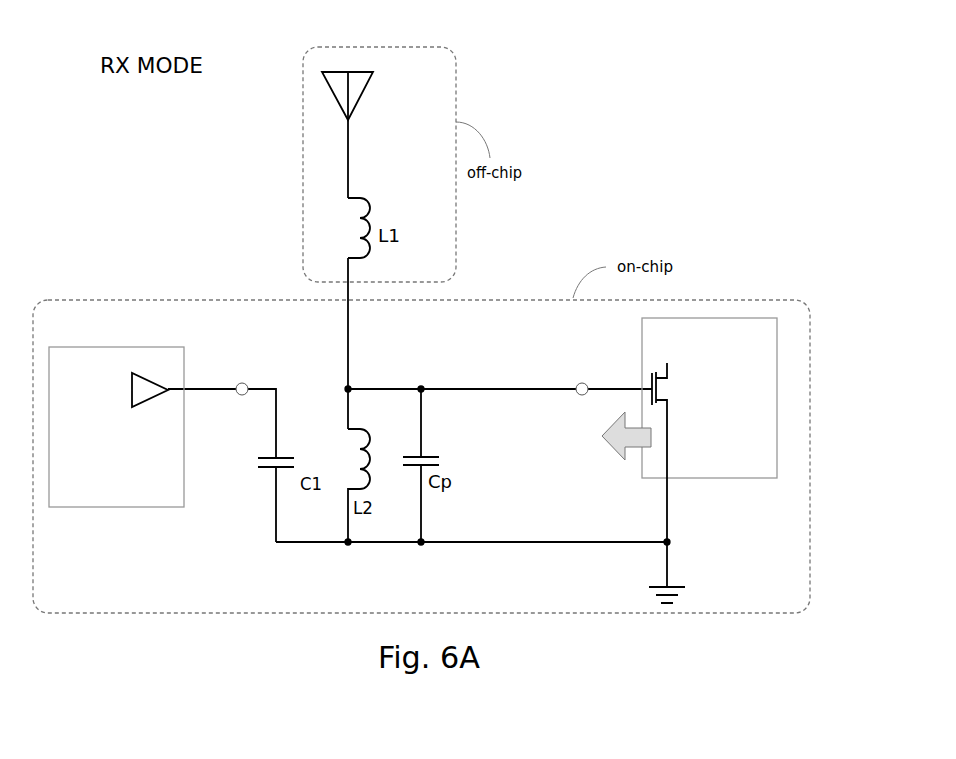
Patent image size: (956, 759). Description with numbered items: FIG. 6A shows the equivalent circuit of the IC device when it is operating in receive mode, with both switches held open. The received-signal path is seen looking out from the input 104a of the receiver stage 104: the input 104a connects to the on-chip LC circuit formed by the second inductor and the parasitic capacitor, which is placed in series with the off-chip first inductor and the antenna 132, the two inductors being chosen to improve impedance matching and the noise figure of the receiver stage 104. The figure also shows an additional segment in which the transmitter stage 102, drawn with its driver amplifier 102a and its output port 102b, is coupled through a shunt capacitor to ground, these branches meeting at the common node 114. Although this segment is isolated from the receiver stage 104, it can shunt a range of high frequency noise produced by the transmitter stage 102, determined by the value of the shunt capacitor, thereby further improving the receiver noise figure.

The antenna 132 is at (372, 102).
The common node 114 is at (350, 386).
The transmitter stage 102 is at (112, 508).
The driver amplifier 102a is at (149, 404).
The transmitter output port 102b is at (242, 381).
The receiver stage 104 is at (704, 479).
The input of the receiver stage 104a is at (582, 382).